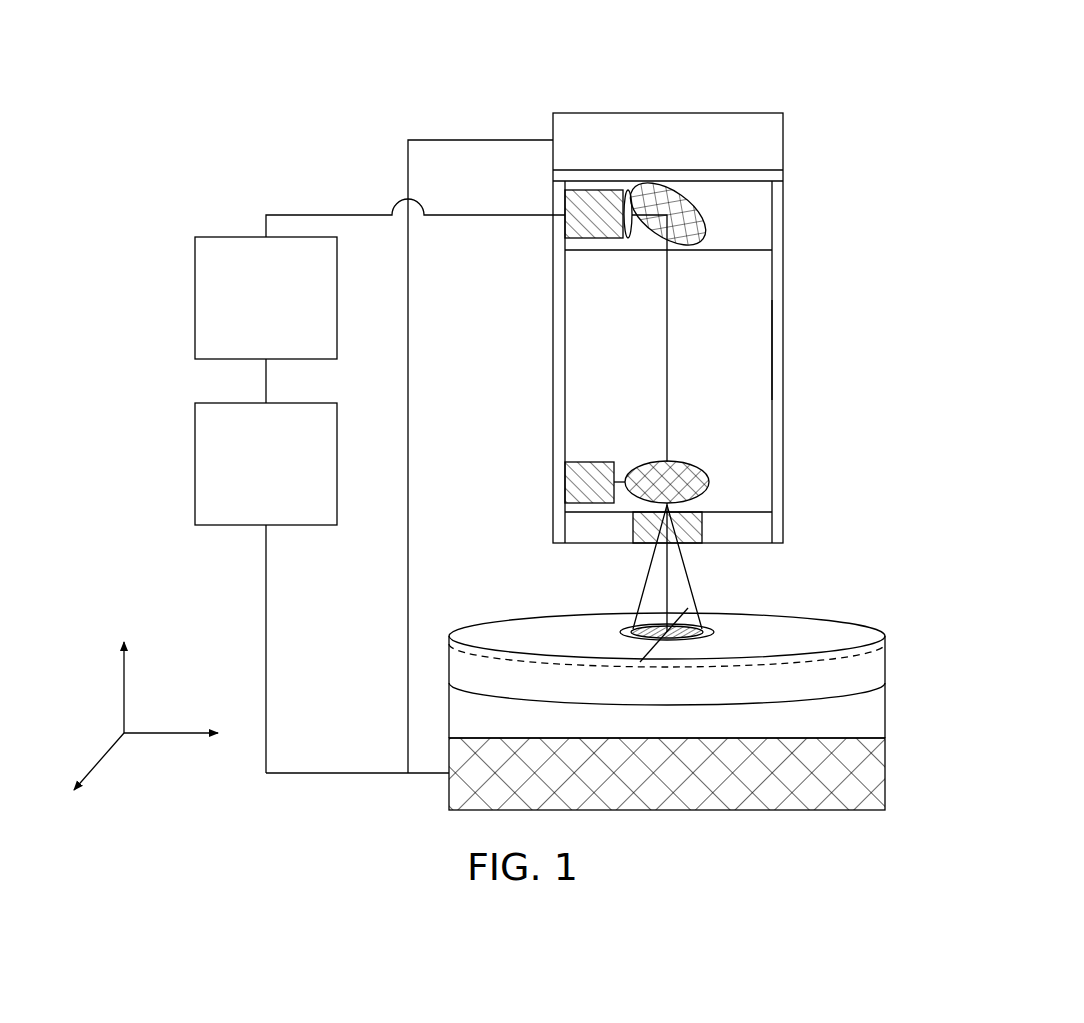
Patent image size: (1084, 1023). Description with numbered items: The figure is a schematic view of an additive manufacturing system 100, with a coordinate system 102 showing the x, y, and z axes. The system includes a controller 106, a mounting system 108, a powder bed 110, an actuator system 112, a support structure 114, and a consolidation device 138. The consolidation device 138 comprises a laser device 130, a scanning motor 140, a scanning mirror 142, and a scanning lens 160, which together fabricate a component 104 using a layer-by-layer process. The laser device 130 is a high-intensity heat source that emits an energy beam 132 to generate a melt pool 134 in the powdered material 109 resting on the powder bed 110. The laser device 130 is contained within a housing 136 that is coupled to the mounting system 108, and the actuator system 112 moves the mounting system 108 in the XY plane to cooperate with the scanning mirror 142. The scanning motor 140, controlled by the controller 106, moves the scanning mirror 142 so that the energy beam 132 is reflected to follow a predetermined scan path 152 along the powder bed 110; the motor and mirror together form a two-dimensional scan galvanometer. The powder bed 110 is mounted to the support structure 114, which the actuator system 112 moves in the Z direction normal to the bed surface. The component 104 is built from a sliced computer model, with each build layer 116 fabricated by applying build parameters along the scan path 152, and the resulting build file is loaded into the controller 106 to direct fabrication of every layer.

The additive manufacturing system 100 is at (680, 76).
The coordinate system 102 is at (84, 696).
The component 104 is at (873, 666).
The controller 106 is at (266, 298).
The mounting system 108 is at (768, 142).
The powdered material 109 is at (623, 623).
The powder bed 110 is at (873, 716).
The actuator system 112 is at (266, 464).
The support structure 114 is at (870, 782).
The build layer 116 is at (842, 632).
The laser device 130 is at (565, 205).
The energy beam 132 is at (672, 281).
The melt pool 134 is at (707, 626).
The housing 136 is at (785, 353).
The consolidation device 138 is at (878, 262).
The scanning motor 140 is at (565, 463).
The scanning mirror 142 is at (707, 470).
The scan path 152 is at (640, 662).
The scanning lens 160 is at (703, 522).